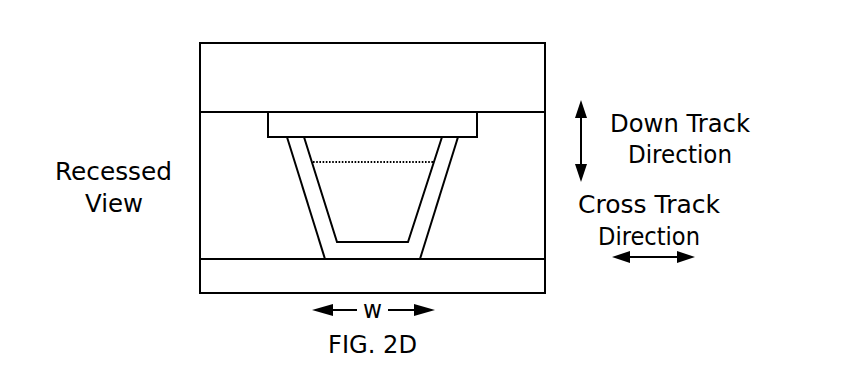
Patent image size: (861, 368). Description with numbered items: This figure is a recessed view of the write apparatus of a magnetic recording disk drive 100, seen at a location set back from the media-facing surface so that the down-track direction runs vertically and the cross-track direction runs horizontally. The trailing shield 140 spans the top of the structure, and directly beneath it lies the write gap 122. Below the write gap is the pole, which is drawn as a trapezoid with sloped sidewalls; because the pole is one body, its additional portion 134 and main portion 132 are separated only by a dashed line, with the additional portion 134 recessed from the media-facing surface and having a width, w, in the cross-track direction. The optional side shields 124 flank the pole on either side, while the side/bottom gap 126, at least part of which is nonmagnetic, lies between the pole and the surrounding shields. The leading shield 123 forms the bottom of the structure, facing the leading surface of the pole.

The disk drive 100 is at (394, 29).
The trailing shield 140 is at (372, 77).
The write gap 122 is at (372, 124).
The additional portion 134 is at (373, 149).
The main portion 132 is at (373, 189).
The side/bottom gap 126 is at (407, 259).
The optional side shields 124 is at (372, 185).
The leading shield 123 is at (372, 276).